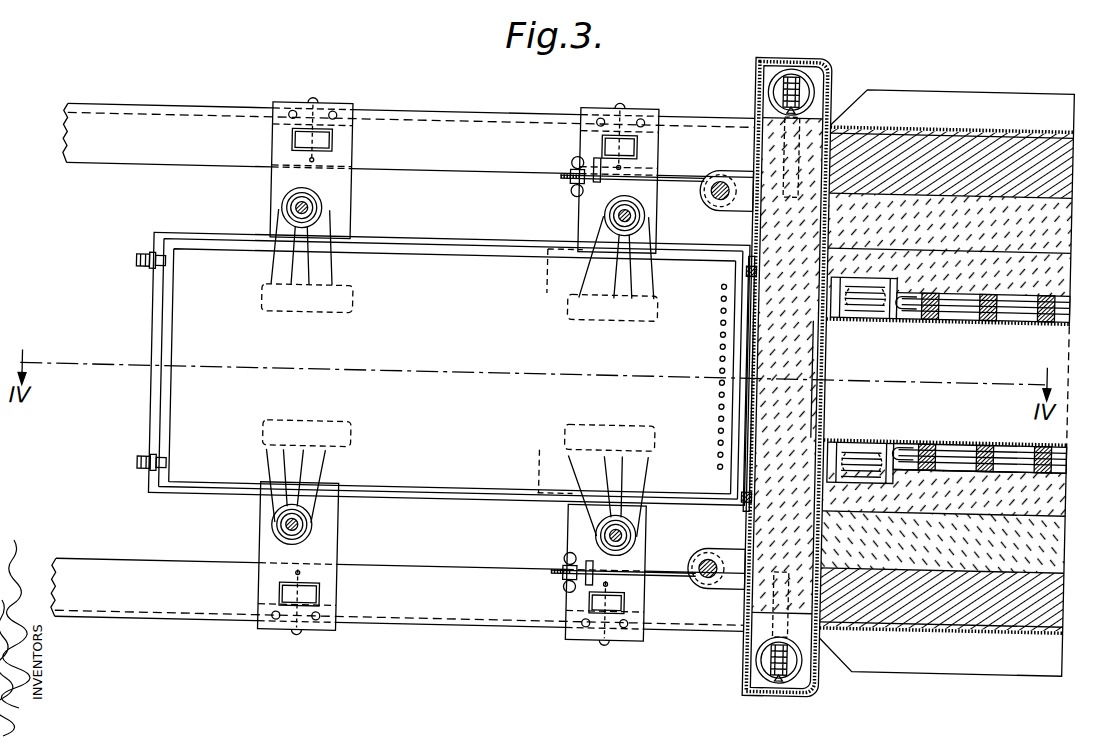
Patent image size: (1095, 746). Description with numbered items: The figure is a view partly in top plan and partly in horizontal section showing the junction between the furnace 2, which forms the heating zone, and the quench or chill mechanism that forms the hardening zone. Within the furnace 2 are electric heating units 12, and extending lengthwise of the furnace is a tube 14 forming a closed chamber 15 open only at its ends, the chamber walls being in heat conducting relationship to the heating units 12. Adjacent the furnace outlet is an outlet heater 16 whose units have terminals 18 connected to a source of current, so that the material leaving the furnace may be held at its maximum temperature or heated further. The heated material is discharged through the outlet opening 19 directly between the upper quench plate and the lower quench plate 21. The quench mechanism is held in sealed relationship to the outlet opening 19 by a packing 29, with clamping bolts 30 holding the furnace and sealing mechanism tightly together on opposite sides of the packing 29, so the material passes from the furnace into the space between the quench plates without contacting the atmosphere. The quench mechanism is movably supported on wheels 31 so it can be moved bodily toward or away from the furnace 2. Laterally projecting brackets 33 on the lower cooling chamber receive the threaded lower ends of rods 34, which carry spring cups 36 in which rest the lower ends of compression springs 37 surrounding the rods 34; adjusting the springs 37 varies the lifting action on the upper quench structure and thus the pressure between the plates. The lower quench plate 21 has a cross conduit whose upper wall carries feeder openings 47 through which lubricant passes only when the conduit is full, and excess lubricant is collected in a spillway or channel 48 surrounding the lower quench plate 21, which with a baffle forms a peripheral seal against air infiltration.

The furnace 2 is at (947, 112).
The heating units 12 is at (1060, 304).
The tube 14 is at (964, 300).
The closed chamber 15 is at (532, 359).
The outlet heater 16 is at (867, 302).
The terminals 18 is at (808, 89).
The outlet opening 19 is at (919, 381).
The lower quench plate 21 is at (449, 368).
The packing 29 is at (744, 266).
The clamping bolts 30 is at (688, 181).
The wheels 31 is at (327, 145).
The laterally projecting brackets 33 is at (602, 212).
The rods 34 is at (318, 213).
The spring cups 36 is at (312, 525).
The compression springs 37 is at (614, 216).
The feeder openings 47 is at (718, 305).
The spillway or channel 48 is at (197, 497).